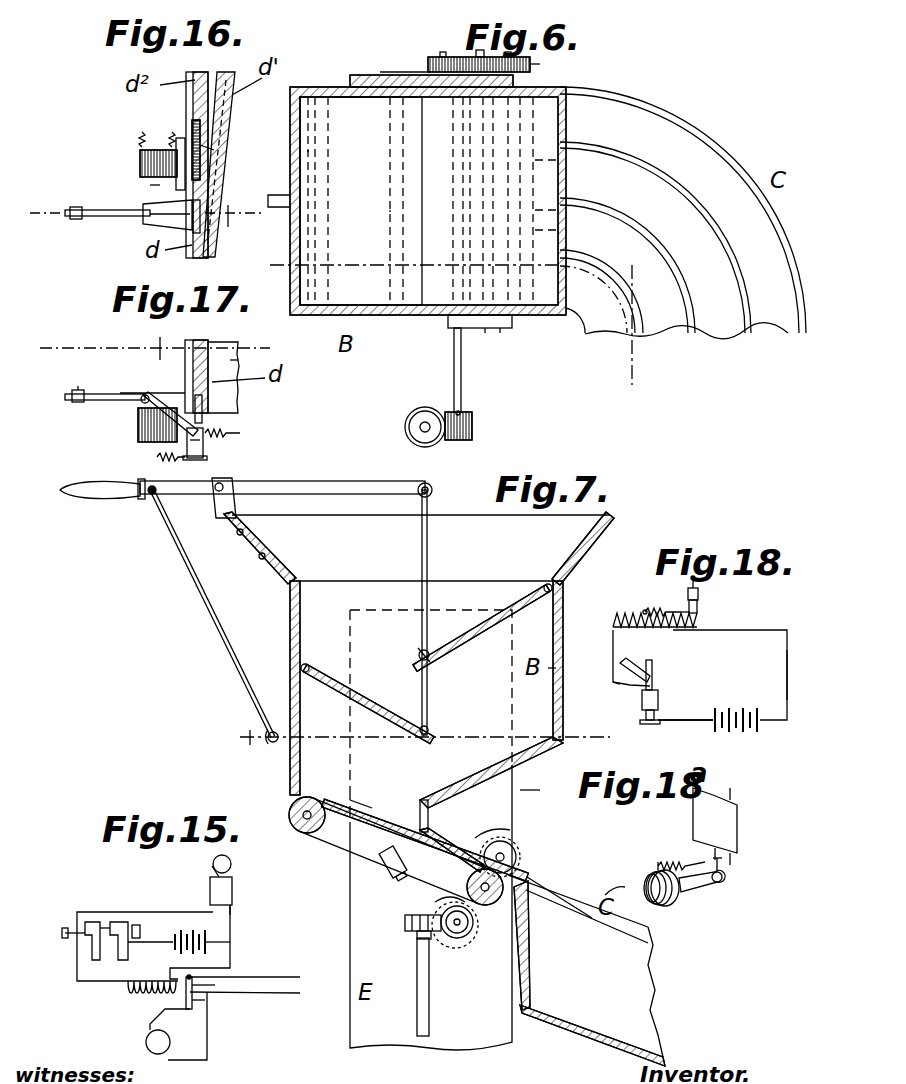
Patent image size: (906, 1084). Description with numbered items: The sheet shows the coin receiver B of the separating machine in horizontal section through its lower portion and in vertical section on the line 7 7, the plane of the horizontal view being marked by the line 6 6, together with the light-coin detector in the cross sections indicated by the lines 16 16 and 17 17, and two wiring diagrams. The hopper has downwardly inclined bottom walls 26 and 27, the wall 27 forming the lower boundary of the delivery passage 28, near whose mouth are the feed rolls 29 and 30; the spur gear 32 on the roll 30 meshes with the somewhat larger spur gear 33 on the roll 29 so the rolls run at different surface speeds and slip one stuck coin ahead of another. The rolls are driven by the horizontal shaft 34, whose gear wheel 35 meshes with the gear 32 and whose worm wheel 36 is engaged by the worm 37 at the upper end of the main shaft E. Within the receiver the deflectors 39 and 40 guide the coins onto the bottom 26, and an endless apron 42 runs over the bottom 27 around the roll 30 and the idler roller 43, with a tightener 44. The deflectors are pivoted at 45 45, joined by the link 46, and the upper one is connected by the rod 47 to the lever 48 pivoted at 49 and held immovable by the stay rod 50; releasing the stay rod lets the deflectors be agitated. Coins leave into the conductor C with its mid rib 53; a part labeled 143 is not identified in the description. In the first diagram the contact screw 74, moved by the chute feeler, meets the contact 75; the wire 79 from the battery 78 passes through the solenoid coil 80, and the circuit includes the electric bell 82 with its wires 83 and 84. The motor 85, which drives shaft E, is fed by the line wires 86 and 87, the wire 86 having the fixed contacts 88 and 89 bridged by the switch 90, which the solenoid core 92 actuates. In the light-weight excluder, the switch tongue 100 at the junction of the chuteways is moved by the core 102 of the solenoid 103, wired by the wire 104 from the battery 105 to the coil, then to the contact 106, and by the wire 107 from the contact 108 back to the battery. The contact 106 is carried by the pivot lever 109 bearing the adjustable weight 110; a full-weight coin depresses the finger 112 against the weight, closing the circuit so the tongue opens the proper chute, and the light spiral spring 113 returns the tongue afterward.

In FIG. 7, the section line 6 6 is at (414, 738).
In FIG. 6, the section line 7 7 is at (443, 328).
In FIG. 17, the section line 16 16 is at (162, 347).
In FIG. 16, the section line 17 17 is at (149, 213).
In FIG. 7, the bottom wall 26 is at (500, 775).
In FIG. 7, the bottom wall 27 is at (350, 835).
In FIG. 7, the delivery passage 28 is at (412, 817).
In FIG. 7, the feed roll 29 is at (520, 848).
In FIG. 7, the feed roll 30 is at (535, 868).
In FIG. 6, the spur gear 32 is at (445, 62).
In FIG. 7, the spur gear 32 is at (525, 940).
In FIG. 6, the spur gear 33 is at (532, 65).
In FIG. 7, the spur gear 33 is at (546, 838).
In FIG. 6, the horizontal shaft 34 is at (462, 374).
In FIG. 7, the horizontal shaft 34 is at (462, 987).
In FIG. 6, the gear wheel 35 is at (392, 72).
In FIG. 7, the gear wheel 35 is at (440, 908).
In FIG. 6, the worm wheel 36 is at (474, 427).
In FIG. 7, the worm wheel 36 is at (466, 940).
In FIG. 6, the worm 37 is at (422, 412).
In FIG. 7, the worm 37 is at (405, 922).
In FIG. 7, the upper deflector 39 is at (455, 662).
In FIG. 6, the lower deflector 40 is at (368, 217).
In FIG. 7, the lower deflector 40 is at (431, 720).
In FIG. 7, the endless apron 42 is at (380, 830).
In FIG. 7, the idler roller 43 is at (295, 805).
In FIG. 7, the tightener 44 is at (382, 860).
In FIG. 7, the pivot connection 45 is at (325, 652).
In FIG. 7, the link 46 is at (430, 703).
In FIG. 7, the rod 47 is at (430, 558).
In FIG. 7, the lever 48 is at (322, 482).
In FIG. 7, the pivot 49 is at (282, 475).
In FIG. 7, the stay rod 50 is at (205, 600).
In FIG. 6, the mid rib 53 is at (622, 202).
In FIG. 15, the contact screw 74 is at (135, 925).
In FIG. 15, the contact screw 75 is at (80, 922).
In FIG. 15, the battery 78 is at (230, 944).
In FIG. 15, the wire 79 is at (153, 966).
In FIG. 15, the solenoid coil 80 is at (132, 992).
In FIG. 15, the electric bell 82 is at (230, 886).
In FIG. 15, the wire 83 is at (232, 912).
In FIG. 15, the wire 84 is at (175, 912).
In FIG. 15, the electric motor 85 is at (146, 1045).
In FIG. 15, the line wire 86 is at (287, 976).
In FIG. 15, the line wire 87 is at (290, 996).
In FIG. 15, the contact point 88 is at (196, 982).
In FIG. 15, the contact point 89 is at (212, 1030).
In FIG. 15, the switch 90 is at (195, 1002).
In FIG. 15, the solenoid core 92 is at (185, 996).
In FIG. 16, the switch tongue 100 is at (202, 165).
In FIG. 18, the switch tongue 100 is at (700, 598).
In FIG. 18A, the switch tongue 100 is at (722, 822).
In FIG. 16, the solenoid core 102 is at (158, 163).
In FIG. 18, the solenoid core 102 is at (700, 622).
In FIG. 18A, the solenoid core 102 is at (722, 884).
In FIG. 16, the solenoid 103 is at (154, 148).
In FIG. 17, the solenoid 103 is at (148, 440).
In FIG. 18, the solenoid 103 is at (627, 612).
In FIG. 18A, the solenoid 103 is at (672, 905).
In FIG. 17, the wire 104 is at (242, 434).
In FIG. 18, the wire 104 is at (786, 672).
In FIG. 18, the battery 105 is at (733, 734).
In FIG. 17, the contact 106 is at (232, 440).
In FIG. 18, the contact 106 is at (615, 686).
In FIG. 17, the wire 107 is at (157, 457).
In FIG. 18, the wire 107 is at (685, 736).
In FIG. 17, the contact 108 is at (200, 455).
In FIG. 18, the contact 108 is at (660, 698).
In FIG. 16, the pivot lever 109 is at (125, 203).
In FIG. 17, the pivot lever 109 is at (118, 395).
In FIG. 16, the adjustable weight 110 is at (78, 208).
In FIG. 17, the adjustable weight 110 is at (75, 404).
In FIG. 16, the finger 112 is at (205, 205).
In FIG. 17, the finger 112 is at (205, 410).
In FIG. 18, the finger 112 is at (652, 664).
In FIG. 17, the light spiral spring 113 is at (150, 404).
In FIG. 18A, the light spiral spring 113 is at (680, 862).
In FIG. 6, the drum 143 is at (340, 162).